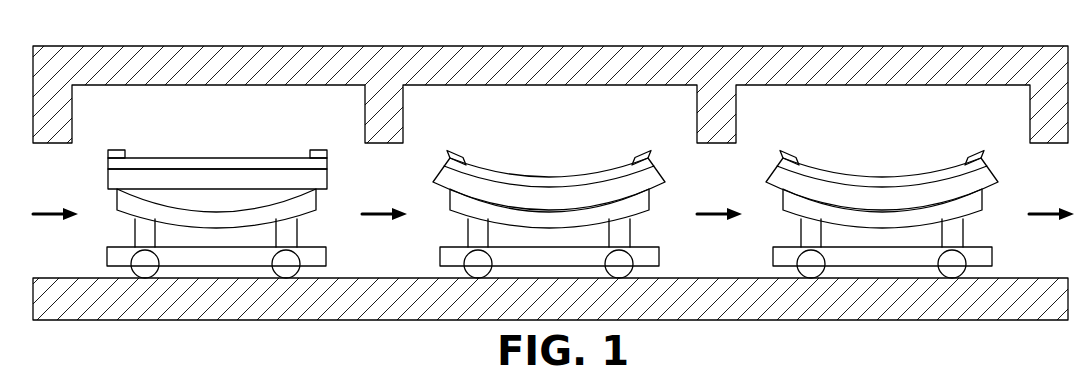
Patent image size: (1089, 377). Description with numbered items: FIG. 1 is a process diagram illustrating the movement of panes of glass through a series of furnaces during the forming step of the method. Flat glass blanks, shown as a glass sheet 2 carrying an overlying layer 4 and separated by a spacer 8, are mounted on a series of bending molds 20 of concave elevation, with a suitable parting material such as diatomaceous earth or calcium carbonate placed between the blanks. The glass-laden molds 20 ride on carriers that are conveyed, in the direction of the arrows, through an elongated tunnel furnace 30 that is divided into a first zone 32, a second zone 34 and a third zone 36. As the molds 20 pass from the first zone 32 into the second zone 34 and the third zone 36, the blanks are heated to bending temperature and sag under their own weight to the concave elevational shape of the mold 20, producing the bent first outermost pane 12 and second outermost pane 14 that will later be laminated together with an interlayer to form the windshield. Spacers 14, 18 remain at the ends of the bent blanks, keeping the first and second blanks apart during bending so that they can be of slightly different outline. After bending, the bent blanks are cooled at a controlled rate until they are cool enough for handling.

The glass sheet 2 is at (327, 182).
The overlying layer 4 is at (327, 166).
The spacer 8 is at (116, 149).
The first outermost pane 12 is at (660, 176).
The second outermost pane 14 is at (651, 157).
The spacer 18 is at (456, 150).
The bending mold 20 is at (127, 207).
The furnace 30 is at (386, 62).
The first heating zone 32 is at (214, 94).
The second heating zone 34 is at (547, 94).
The third heating zone 36 is at (880, 94).